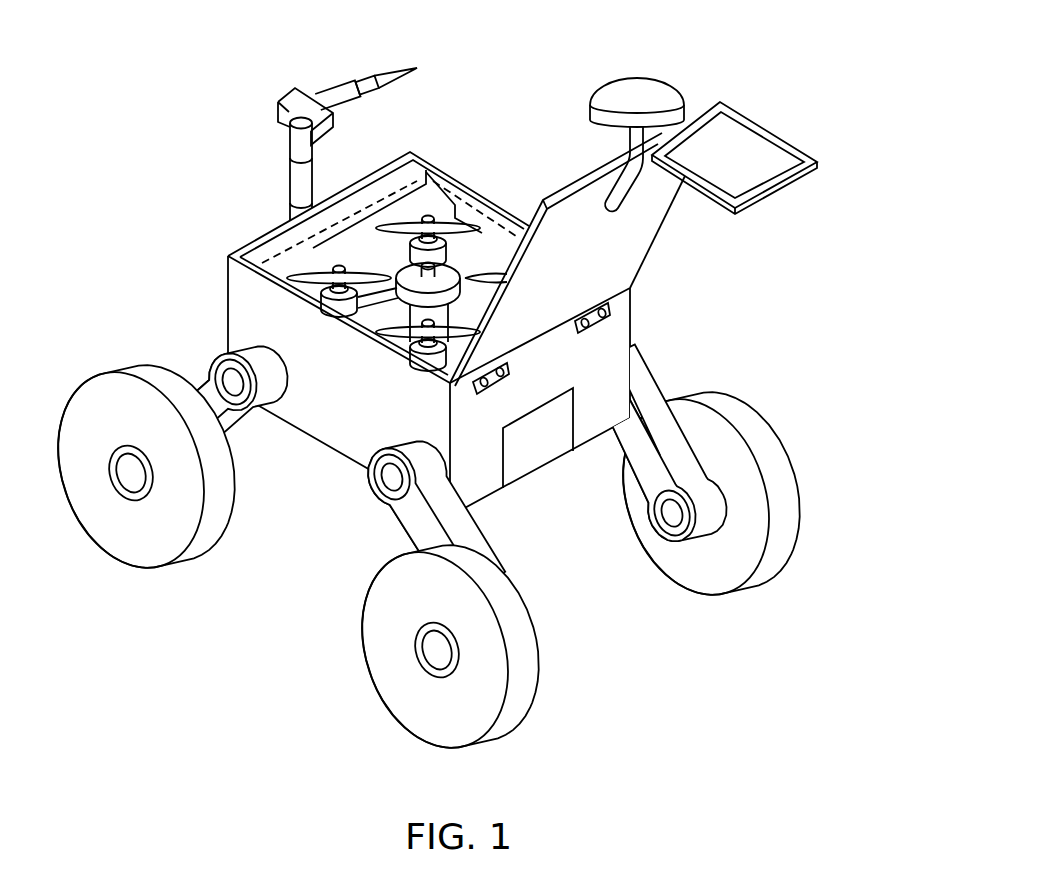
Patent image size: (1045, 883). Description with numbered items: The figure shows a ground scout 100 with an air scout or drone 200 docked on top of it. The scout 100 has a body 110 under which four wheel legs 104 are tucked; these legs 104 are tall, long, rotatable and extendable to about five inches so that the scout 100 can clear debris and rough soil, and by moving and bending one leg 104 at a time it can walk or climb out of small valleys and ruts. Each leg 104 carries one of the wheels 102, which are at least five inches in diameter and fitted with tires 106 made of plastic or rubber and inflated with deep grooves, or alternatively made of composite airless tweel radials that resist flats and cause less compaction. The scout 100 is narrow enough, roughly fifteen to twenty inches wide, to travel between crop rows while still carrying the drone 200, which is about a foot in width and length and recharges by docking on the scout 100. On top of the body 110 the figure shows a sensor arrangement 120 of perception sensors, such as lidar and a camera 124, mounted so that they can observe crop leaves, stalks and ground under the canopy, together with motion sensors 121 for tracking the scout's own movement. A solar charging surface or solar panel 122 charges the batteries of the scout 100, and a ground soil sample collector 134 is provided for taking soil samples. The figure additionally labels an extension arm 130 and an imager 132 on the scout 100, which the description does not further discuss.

The ground scout 100 is at (487, 385).
The wheels 102 is at (417, 556).
The wheel legs 104 is at (403, 515).
The tires 106 is at (520, 658).
The body 110 is at (367, 350).
The sensors 120 is at (697, 195).
The motion sensors 121 is at (533, 449).
The solar panel 122 is at (740, 135).
The camera 124 is at (647, 96).
The extension arm 130 is at (296, 185).
The imager 132 is at (308, 97).
The ground soil sample collector 134 is at (392, 72).
The drone 200 is at (455, 270).